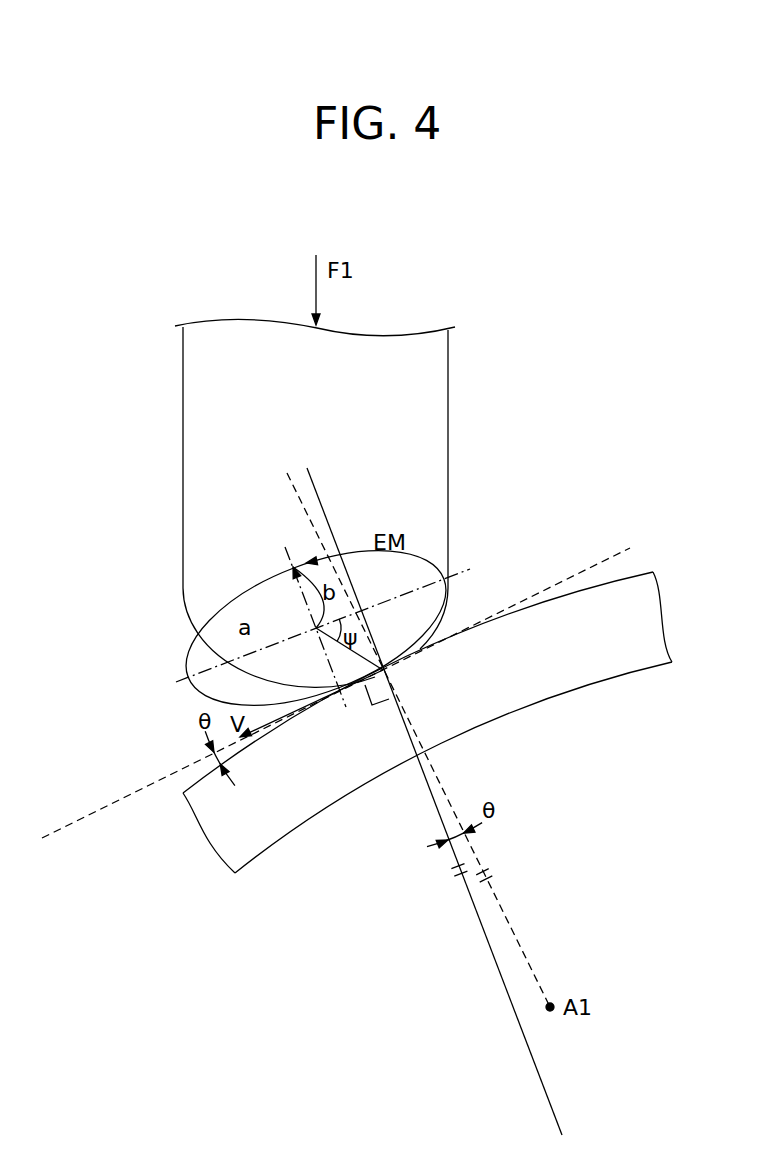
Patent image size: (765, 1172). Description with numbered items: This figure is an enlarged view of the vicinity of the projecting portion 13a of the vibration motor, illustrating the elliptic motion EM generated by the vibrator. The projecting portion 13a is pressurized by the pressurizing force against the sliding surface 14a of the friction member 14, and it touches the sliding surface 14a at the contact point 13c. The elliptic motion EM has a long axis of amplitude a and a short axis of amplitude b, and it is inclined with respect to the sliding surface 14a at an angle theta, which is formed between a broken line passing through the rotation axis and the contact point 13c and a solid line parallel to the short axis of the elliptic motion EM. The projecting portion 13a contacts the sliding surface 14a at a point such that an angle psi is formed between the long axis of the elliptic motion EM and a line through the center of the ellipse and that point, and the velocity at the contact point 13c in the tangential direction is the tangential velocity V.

The projecting portion 13a is at (323, 512).
The contact point 13c is at (432, 616).
The friction member 14 is at (382, 722).
The sliding surface 14a is at (183, 770).